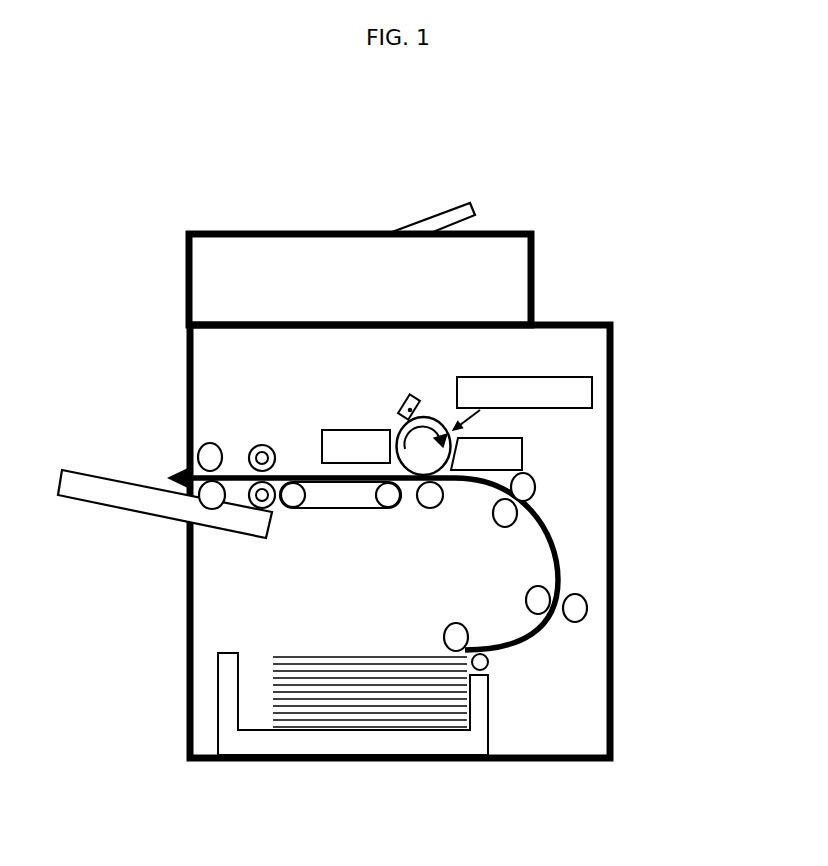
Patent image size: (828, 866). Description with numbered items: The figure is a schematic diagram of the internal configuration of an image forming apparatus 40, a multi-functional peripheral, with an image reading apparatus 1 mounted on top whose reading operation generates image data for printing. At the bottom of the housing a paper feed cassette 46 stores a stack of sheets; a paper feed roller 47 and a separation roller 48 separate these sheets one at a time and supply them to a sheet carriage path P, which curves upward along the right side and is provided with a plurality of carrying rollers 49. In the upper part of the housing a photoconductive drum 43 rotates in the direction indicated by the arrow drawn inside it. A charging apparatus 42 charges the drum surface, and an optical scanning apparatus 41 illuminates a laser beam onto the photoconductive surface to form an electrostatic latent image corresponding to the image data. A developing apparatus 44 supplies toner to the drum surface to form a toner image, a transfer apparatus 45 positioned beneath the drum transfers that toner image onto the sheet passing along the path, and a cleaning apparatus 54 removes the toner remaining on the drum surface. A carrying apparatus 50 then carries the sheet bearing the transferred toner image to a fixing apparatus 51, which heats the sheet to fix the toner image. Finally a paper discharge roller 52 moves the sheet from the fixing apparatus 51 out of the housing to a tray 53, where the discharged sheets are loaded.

The image reading apparatus 1 is at (500, 282).
The image forming apparatus 40 is at (614, 717).
The optical scanning apparatus 41 is at (577, 395).
The charging apparatus 42 is at (403, 397).
The photoconductive drum 43 is at (407, 427).
The developing apparatus 44 is at (502, 452).
The transfer apparatus 45 is at (430, 500).
The paper feed cassette 46 is at (410, 742).
The paper feed roller 47 is at (443, 633).
The separation roller 48 is at (487, 670).
The carrying rollers 49 is at (537, 492).
The carrying apparatus 50 is at (323, 510).
The fixing apparatus 51 is at (262, 445).
The paper discharge roller 52 is at (207, 442).
The tray 53 is at (100, 495).
The cleaning apparatus 54 is at (335, 438).
The sheet carriage path P is at (553, 557).